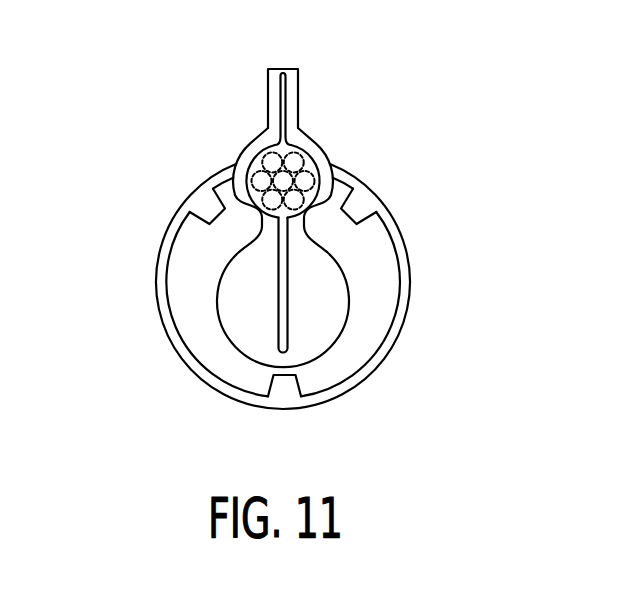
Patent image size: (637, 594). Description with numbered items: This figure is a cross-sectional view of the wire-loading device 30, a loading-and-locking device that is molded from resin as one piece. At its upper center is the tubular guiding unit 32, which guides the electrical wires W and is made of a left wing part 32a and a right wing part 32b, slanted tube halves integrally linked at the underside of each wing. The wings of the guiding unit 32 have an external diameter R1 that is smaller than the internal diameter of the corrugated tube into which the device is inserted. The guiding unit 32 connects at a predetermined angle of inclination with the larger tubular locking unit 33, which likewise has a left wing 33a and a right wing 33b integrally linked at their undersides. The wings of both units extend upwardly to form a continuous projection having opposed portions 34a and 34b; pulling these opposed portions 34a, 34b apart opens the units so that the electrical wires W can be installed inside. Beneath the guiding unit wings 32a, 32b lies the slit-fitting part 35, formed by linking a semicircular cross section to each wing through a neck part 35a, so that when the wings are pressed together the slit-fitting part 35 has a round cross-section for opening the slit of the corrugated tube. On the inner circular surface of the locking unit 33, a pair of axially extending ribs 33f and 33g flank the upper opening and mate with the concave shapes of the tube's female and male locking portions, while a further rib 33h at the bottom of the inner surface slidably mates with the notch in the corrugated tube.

The wire-loading device 30 is at (118, 100).
The tubular guiding unit 32 is at (216, 150).
The left wing part 32a is at (258, 137).
The right wing part 32b is at (308, 134).
The tubular locking unit 33 is at (424, 274).
The left wing 33a is at (168, 314).
The right wing 33b is at (407, 247).
The rib 33f is at (166, 240).
The rib 33g is at (355, 212).
The rib 33h is at (298, 381).
The opposed portion 34a is at (268, 81).
The opposed portion 34b is at (300, 82).
The slit-fitting part 35 is at (217, 324).
The neck part 35a is at (258, 233).
The electrical wires W is at (318, 152).
The external diameter R1 is at (333, 182).